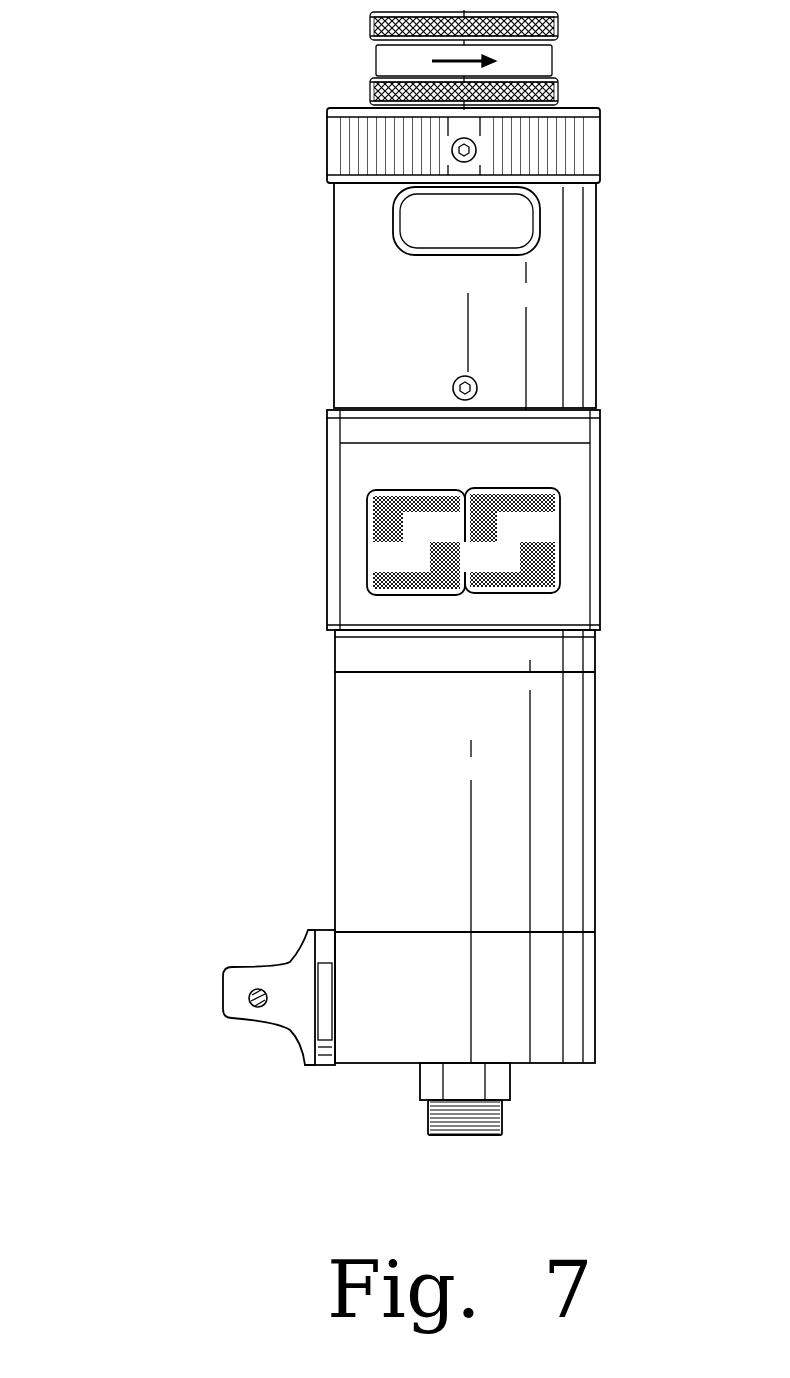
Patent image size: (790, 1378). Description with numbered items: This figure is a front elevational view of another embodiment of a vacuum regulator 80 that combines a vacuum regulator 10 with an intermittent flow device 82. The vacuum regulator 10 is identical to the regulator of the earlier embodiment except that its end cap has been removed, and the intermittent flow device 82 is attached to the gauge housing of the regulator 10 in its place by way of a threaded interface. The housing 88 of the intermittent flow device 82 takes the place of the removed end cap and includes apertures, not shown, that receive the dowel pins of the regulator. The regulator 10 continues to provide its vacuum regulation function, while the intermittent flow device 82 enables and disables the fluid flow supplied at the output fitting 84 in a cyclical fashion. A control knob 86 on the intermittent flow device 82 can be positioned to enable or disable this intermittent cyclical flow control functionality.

The vacuum regulator 80 is at (172, 266).
The vacuum regulator 10 is at (612, 14).
The intermittent flow device 82 is at (610, 668).
The housing 88 is at (334, 783).
The control knob 86 is at (255, 968).
The output fitting 84 is at (417, 1100).